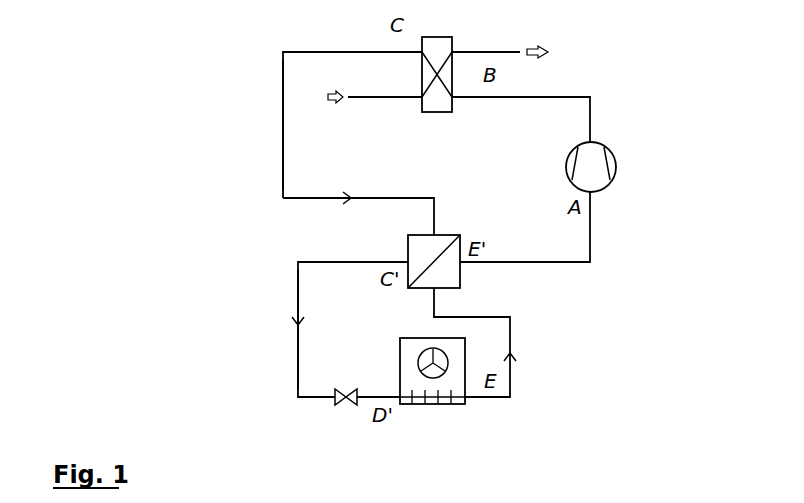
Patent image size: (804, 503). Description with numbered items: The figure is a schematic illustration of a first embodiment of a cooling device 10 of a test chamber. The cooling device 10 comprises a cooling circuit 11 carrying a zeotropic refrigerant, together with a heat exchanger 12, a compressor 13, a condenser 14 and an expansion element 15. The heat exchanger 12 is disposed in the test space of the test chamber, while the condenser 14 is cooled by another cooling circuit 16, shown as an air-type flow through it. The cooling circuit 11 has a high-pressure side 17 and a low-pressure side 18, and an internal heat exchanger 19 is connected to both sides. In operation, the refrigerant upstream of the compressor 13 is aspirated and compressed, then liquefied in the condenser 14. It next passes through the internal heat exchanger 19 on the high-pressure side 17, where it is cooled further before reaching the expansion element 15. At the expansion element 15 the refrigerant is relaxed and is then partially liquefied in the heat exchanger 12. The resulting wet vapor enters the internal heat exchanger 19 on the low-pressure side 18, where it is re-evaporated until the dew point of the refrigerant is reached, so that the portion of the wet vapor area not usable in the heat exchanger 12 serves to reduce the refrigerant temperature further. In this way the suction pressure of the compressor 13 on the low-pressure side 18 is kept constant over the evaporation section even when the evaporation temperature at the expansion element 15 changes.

The cooling device 10 is at (198, 90).
The cooling circuit 11 is at (280, 176).
The heat exchanger 12 is at (455, 378).
The compressor 13 is at (592, 172).
The condenser 14 is at (440, 44).
The expansion element 15 is at (341, 401).
The another cooling circuit 16 is at (380, 105).
The high-pressure side 17 is at (292, 281).
The low-pressure side 18 is at (560, 270).
The internal heat exchanger 19 is at (446, 248).